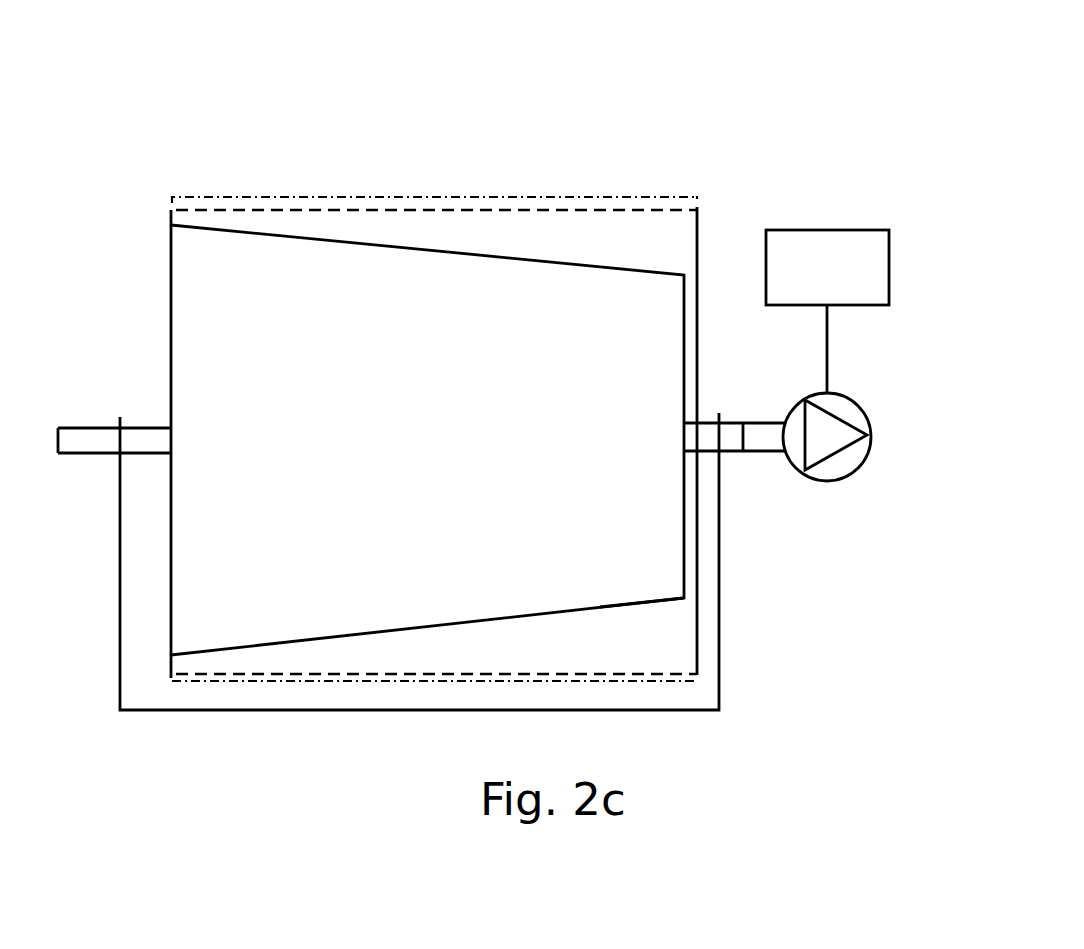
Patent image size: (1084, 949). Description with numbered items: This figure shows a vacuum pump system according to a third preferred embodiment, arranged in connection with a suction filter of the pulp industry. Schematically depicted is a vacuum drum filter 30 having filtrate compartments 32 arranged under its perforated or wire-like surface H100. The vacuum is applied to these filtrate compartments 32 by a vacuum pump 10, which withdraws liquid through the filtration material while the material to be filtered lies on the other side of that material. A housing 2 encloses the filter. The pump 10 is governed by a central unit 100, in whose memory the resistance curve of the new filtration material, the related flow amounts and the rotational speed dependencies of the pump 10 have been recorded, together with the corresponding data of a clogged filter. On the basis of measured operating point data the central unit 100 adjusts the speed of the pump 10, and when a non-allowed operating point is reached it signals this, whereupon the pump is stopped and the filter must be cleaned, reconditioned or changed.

The vacuum drum filter 30 is at (650, 153).
The housing 2 is at (505, 208).
The filtrate compartments 32 is at (408, 220).
The vacuum pump 10 is at (843, 402).
The central unit 100 is at (861, 284).
The perforated or wire-like surface H100 is at (623, 605).